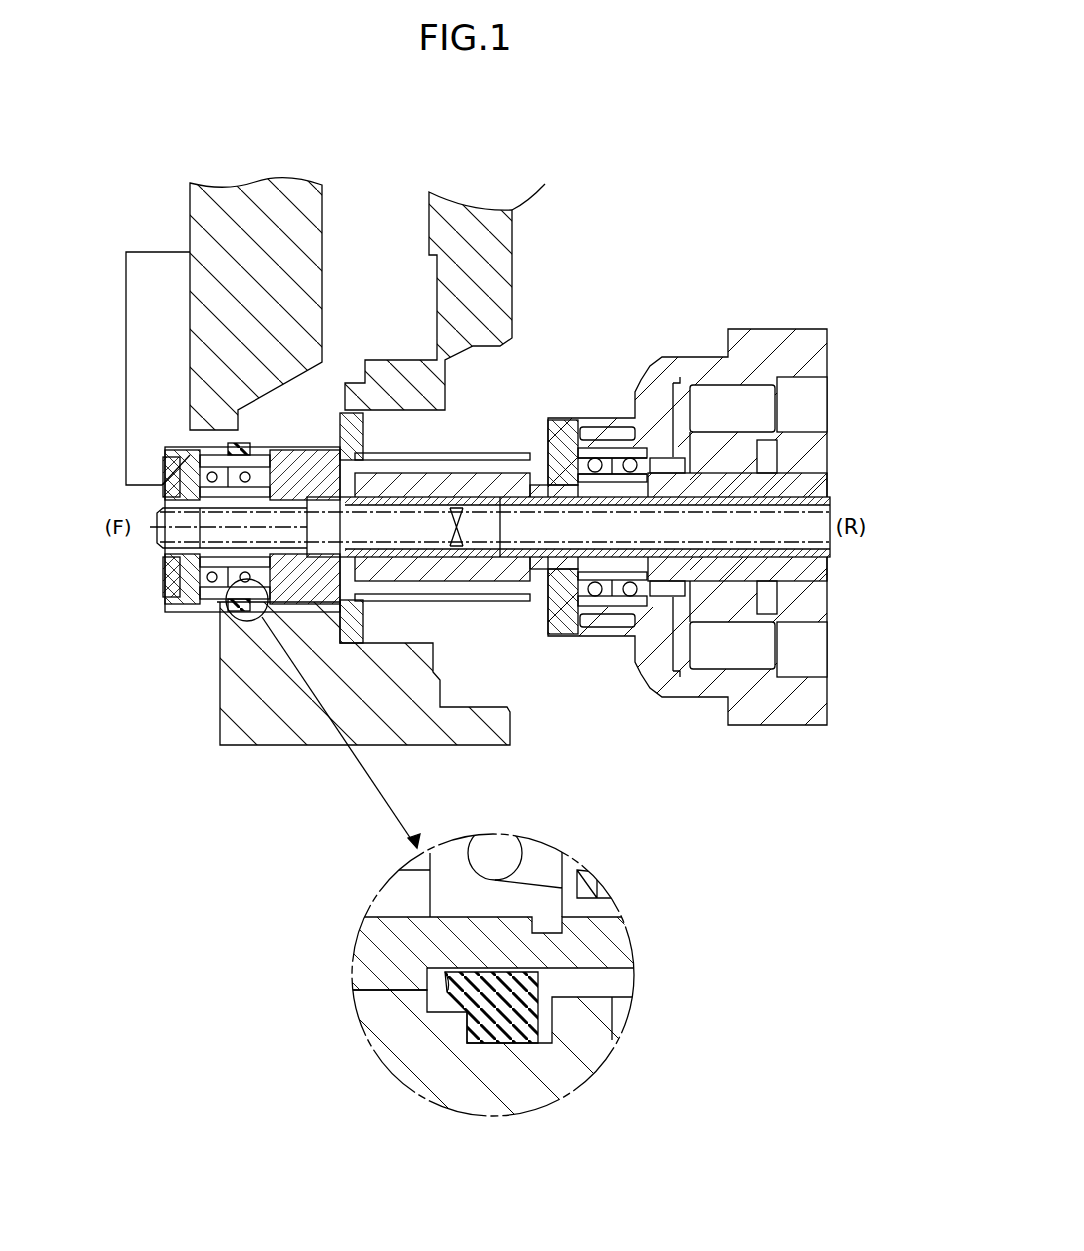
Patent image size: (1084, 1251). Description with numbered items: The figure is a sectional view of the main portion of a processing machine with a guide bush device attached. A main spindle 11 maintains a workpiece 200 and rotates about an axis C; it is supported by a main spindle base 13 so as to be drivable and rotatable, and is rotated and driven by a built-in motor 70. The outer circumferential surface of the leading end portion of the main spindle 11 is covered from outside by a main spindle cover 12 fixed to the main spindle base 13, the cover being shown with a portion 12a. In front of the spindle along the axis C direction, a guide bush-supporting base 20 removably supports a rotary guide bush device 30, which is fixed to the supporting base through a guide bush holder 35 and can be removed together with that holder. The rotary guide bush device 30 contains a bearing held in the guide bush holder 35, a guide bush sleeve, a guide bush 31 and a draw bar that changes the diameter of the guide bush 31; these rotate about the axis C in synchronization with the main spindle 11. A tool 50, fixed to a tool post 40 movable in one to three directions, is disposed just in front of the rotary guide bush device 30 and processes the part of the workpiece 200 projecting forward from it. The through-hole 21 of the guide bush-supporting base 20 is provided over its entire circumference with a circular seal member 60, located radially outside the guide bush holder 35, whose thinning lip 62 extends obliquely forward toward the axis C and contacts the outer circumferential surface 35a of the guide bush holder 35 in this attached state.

The main spindle 11 is at (473, 563).
The main spindle cover 12 is at (515, 450).
The sleeve portion of front housing 12a is at (425, 453).
The main spindle base 13 is at (745, 345).
The guide bush-supporting base 20 is at (243, 687).
The through-hole 21 is at (263, 612).
The rotary guide bush device 30 is at (170, 597).
The guide bush 31 is at (160, 508).
The guide bush holder 35 is at (185, 447).
The outer circumferential surface 35a is at (583, 972).
The tool post 40 is at (313, 232).
The tool 50 is at (147, 263).
The seal member 60 is at (243, 440).
The lip 62 is at (447, 978).
The built-in motor 70 is at (795, 393).
The workpiece 200 is at (165, 533).
The axis C is at (498, 528).